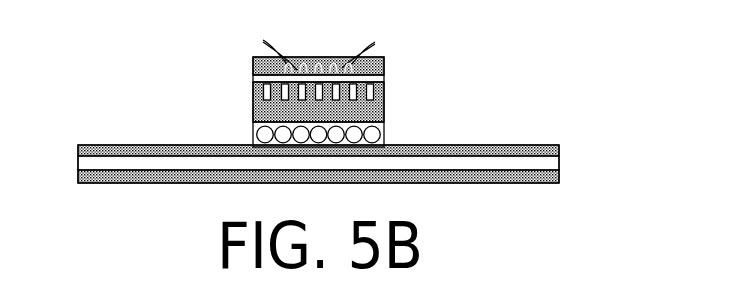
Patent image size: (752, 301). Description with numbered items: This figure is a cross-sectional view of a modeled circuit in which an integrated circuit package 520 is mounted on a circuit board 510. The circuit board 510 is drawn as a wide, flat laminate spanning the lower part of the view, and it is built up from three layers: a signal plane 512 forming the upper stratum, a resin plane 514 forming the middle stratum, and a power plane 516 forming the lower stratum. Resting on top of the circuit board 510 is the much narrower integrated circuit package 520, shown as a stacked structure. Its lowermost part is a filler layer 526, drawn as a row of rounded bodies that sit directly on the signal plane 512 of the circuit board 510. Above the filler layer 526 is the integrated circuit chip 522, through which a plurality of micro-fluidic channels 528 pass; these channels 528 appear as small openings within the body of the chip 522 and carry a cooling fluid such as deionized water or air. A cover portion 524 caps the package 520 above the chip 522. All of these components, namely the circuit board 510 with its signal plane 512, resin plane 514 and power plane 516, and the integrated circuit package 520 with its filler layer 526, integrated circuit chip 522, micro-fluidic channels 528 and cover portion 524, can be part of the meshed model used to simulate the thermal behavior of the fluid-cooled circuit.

The circuit board 510 is at (491, 141).
The signal plane 512 is at (573, 140).
The resin plane 514 is at (428, 163).
The power plane 516 is at (573, 186).
The integrated circuit package 520 is at (308, 52).
The integrated circuit chip 522 is at (385, 100).
The cover portion 524 is at (252, 63).
The filler layer 526 is at (385, 135).
The micro-fluidic channels 528 is at (317, 50).